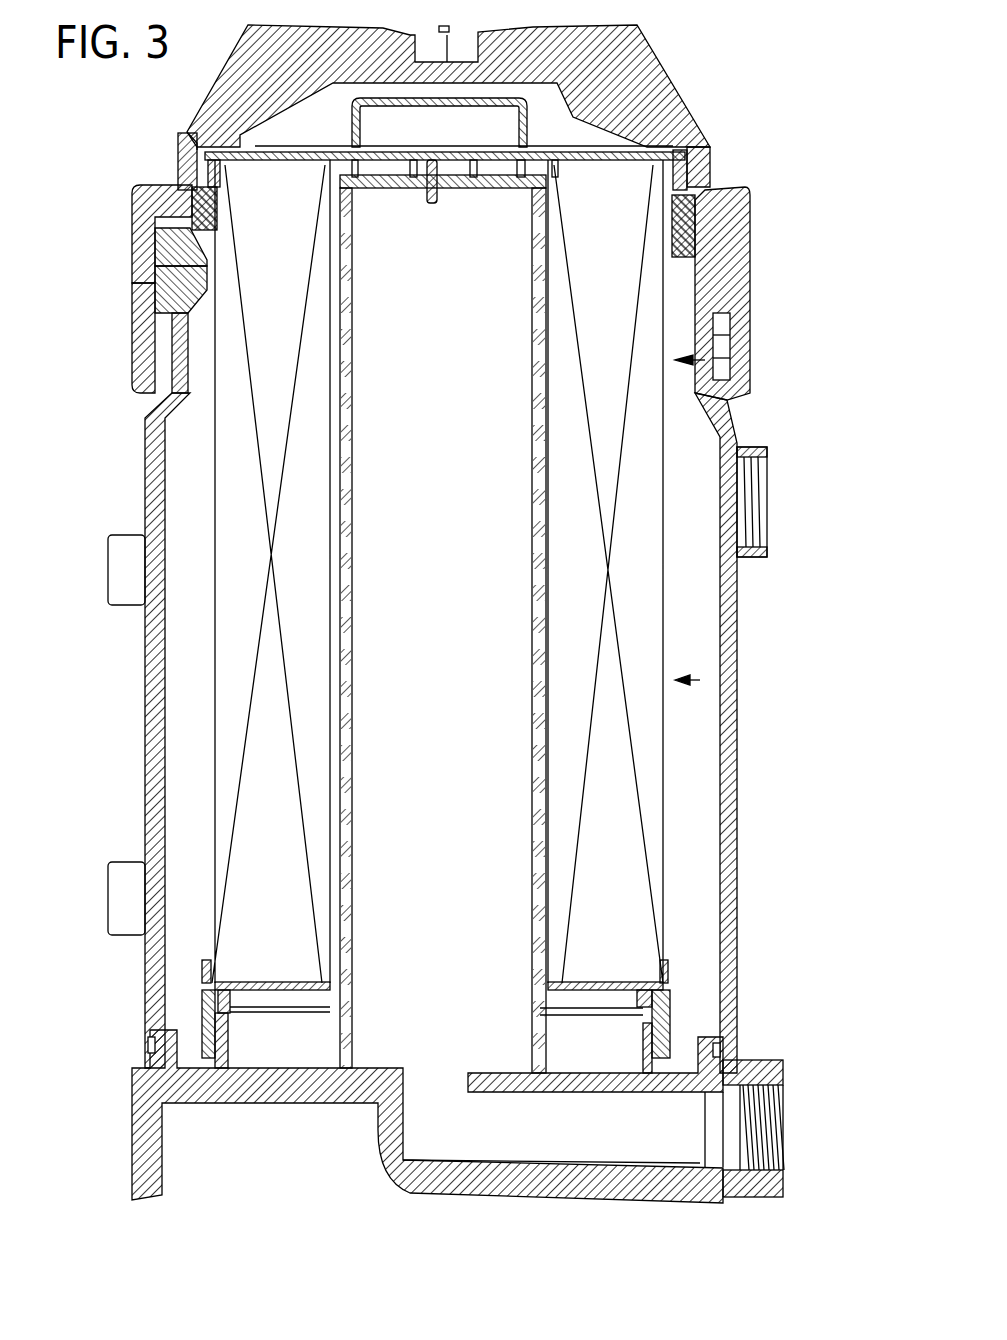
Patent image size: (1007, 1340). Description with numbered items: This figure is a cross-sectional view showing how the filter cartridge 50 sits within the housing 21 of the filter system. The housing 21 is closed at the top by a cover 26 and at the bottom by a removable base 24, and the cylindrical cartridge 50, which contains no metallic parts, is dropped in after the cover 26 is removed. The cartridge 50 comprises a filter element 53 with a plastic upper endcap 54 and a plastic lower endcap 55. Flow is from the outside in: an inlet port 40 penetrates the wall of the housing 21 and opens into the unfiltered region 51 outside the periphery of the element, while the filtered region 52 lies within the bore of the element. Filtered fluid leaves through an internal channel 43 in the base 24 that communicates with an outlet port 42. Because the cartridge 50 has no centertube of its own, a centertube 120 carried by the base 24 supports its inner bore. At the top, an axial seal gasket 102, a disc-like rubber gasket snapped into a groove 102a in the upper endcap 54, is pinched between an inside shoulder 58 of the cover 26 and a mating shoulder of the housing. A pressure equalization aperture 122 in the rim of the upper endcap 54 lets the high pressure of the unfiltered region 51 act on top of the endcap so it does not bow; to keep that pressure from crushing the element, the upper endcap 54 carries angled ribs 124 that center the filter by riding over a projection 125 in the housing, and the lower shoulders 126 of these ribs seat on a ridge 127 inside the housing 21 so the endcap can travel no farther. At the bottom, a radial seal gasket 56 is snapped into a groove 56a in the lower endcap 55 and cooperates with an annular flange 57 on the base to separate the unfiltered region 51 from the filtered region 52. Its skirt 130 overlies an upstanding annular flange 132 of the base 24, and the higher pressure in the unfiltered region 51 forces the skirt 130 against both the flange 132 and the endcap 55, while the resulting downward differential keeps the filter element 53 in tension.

The cover 26 is at (647, 58).
The upper endcap 54 is at (703, 133).
The pressure equalization aperture 122 is at (677, 173).
The axial seal gasket 102 is at (173, 175).
The groove 102a is at (185, 133).
The inside shoulder 58 is at (182, 172).
The projection 125 is at (147, 242).
The lower shoulders 126 is at (143, 325).
The ribs 124 is at (167, 258).
The ridge 127 is at (177, 285).
The housing 21 is at (147, 470).
The filter cartridge 50 is at (740, 352).
The unfiltered region 51 is at (693, 572).
The inlet port 40 is at (750, 500).
The centertube 120 is at (540, 593).
The filtered region 52 is at (477, 677).
The filter element 53 is at (700, 680).
The lower endcap 55 is at (667, 968).
The radial seal gasket 56 is at (670, 1007).
The groove 56a is at (643, 1040).
The annular flange 57 is at (637, 997).
The skirt 130 is at (205, 1020).
The upstanding annular flange 132 is at (230, 1037).
The base 24 is at (247, 1040).
The internal channel 43 is at (458, 1131).
The outlet port 42 is at (768, 1127).